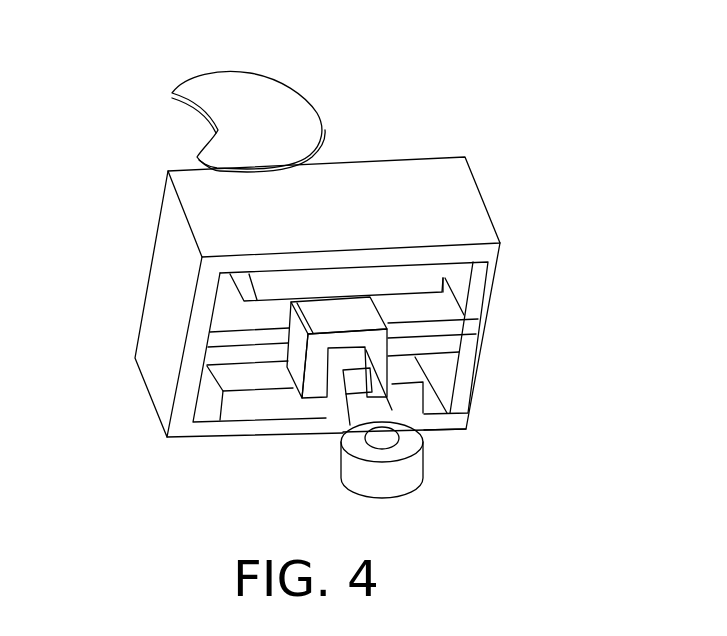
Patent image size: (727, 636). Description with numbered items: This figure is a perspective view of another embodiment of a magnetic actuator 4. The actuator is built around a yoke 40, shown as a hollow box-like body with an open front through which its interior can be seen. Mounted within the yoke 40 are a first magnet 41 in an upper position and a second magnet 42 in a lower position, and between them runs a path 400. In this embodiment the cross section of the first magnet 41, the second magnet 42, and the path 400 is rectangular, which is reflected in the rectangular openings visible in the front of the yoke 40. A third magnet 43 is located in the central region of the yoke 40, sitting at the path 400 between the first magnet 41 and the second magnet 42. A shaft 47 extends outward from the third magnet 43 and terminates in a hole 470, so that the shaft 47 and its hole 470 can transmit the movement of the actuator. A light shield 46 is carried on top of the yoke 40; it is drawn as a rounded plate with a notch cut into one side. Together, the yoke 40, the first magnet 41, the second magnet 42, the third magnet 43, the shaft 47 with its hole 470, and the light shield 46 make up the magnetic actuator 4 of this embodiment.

The magnetic actuator 4 is at (525, 85).
The yoke 40 is at (215, 213).
The first magnet 41 is at (265, 293).
The second magnet 42 is at (240, 410).
The third magnet 43 is at (352, 378).
The light shield 46 is at (267, 112).
The shaft 47 is at (393, 415).
The hole 470 is at (383, 435).
The path 400 is at (430, 330).